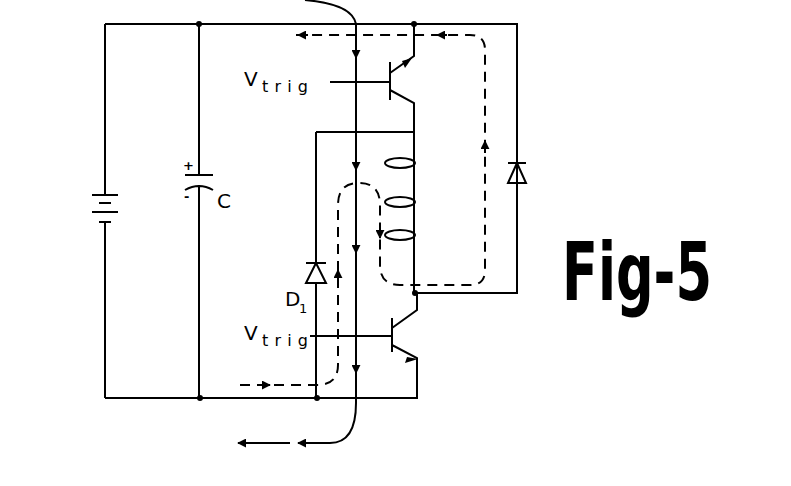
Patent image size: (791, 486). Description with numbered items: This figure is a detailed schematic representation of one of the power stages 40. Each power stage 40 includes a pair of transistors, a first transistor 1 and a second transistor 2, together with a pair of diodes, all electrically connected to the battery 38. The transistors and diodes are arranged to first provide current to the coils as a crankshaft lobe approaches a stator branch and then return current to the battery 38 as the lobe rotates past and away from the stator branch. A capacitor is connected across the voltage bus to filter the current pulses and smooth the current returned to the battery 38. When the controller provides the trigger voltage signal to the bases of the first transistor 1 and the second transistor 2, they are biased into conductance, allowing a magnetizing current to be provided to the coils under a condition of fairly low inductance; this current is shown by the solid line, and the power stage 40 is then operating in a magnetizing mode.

The battery 38 is at (89, 208).
The power stage 40 is at (556, 108).
The transistor Q1 1 is at (384, 78).
The transistor Q2 2 is at (382, 345).